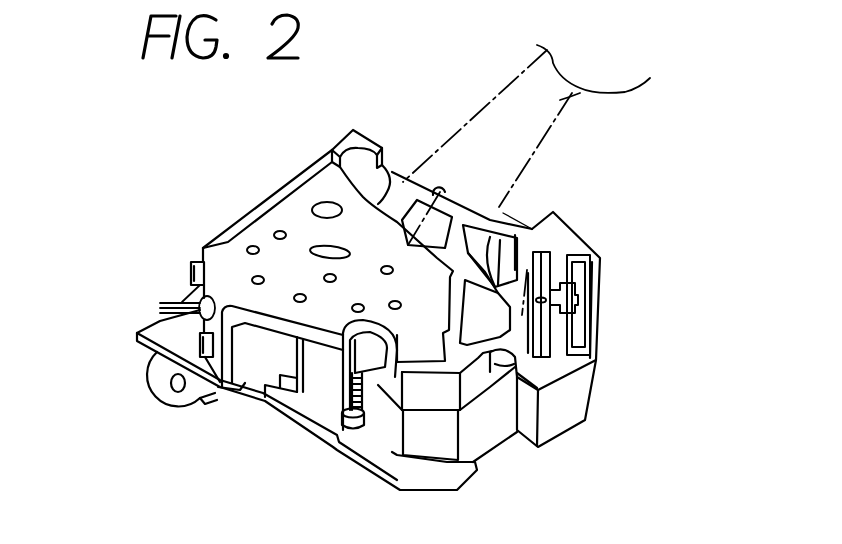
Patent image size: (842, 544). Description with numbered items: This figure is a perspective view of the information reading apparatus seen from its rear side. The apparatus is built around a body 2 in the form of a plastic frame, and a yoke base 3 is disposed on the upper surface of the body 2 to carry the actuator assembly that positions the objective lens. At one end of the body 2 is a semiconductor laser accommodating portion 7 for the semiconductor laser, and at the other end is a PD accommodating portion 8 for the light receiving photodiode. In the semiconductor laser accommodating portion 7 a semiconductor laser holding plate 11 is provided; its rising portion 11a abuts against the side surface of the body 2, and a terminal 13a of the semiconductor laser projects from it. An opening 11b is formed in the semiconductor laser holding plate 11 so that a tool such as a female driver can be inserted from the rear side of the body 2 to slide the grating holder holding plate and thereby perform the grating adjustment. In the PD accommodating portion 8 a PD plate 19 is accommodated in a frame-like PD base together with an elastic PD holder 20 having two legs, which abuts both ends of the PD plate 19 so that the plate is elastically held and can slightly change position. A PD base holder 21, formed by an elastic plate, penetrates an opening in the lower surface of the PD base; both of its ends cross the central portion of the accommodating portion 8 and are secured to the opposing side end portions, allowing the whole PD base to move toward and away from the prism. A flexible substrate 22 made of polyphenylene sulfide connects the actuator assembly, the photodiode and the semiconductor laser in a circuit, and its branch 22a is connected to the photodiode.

The body 2 is at (512, 200).
The yoke base 3 is at (420, 472).
The semiconductor laser accommodating portion 7 is at (258, 333).
The PD accommodating portion 8 is at (598, 330).
The semiconductor laser holding plate 11 is at (283, 220).
The rising portion 11a is at (160, 340).
The opening 11b is at (327, 210).
The terminal 13a is at (173, 302).
The PD plate 19 is at (576, 265).
The PD holder 20 is at (560, 256).
The PD base holder 21 is at (578, 313).
The flexible substrate 22 is at (654, 72).
The branch 22a is at (492, 200).